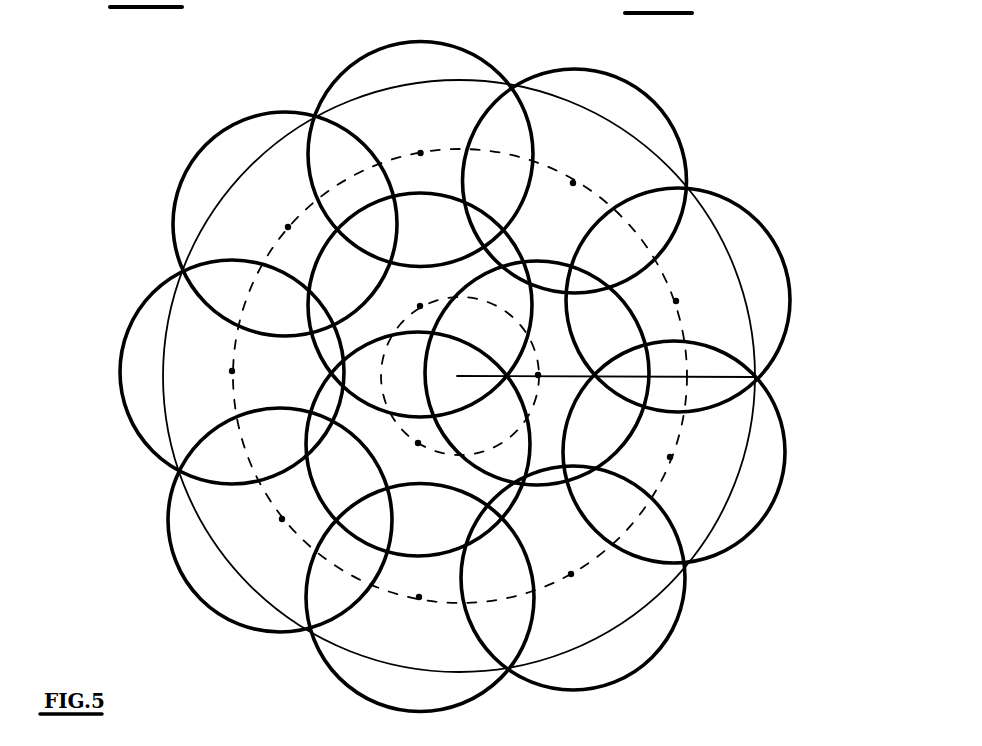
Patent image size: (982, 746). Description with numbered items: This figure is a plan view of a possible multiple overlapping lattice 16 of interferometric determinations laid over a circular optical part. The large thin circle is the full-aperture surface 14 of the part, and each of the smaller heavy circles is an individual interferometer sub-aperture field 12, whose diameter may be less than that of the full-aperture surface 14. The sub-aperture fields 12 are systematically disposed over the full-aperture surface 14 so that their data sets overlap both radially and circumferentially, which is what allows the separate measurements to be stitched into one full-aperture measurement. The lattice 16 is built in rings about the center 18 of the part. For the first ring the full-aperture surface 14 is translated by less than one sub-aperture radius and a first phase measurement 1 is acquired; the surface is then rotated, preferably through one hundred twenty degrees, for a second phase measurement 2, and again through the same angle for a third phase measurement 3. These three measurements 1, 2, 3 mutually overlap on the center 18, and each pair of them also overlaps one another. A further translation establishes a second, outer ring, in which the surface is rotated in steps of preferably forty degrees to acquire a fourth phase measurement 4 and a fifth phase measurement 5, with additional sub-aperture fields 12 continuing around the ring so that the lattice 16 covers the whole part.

The interferometer sub-aperture field 12 is at (211, 143).
The full-aperture surface 14 is at (222, 203).
The overlapping lattice 16 is at (822, 117).
The center 18 is at (457, 376).
The first phase measurement 1 is at (547, 363).
The second phase measurement 2 is at (407, 458).
The third phase measurement 3 is at (409, 301).
The fourth phase measurement 4 is at (683, 459).
The fifth phase measurement 5 is at (583, 590).